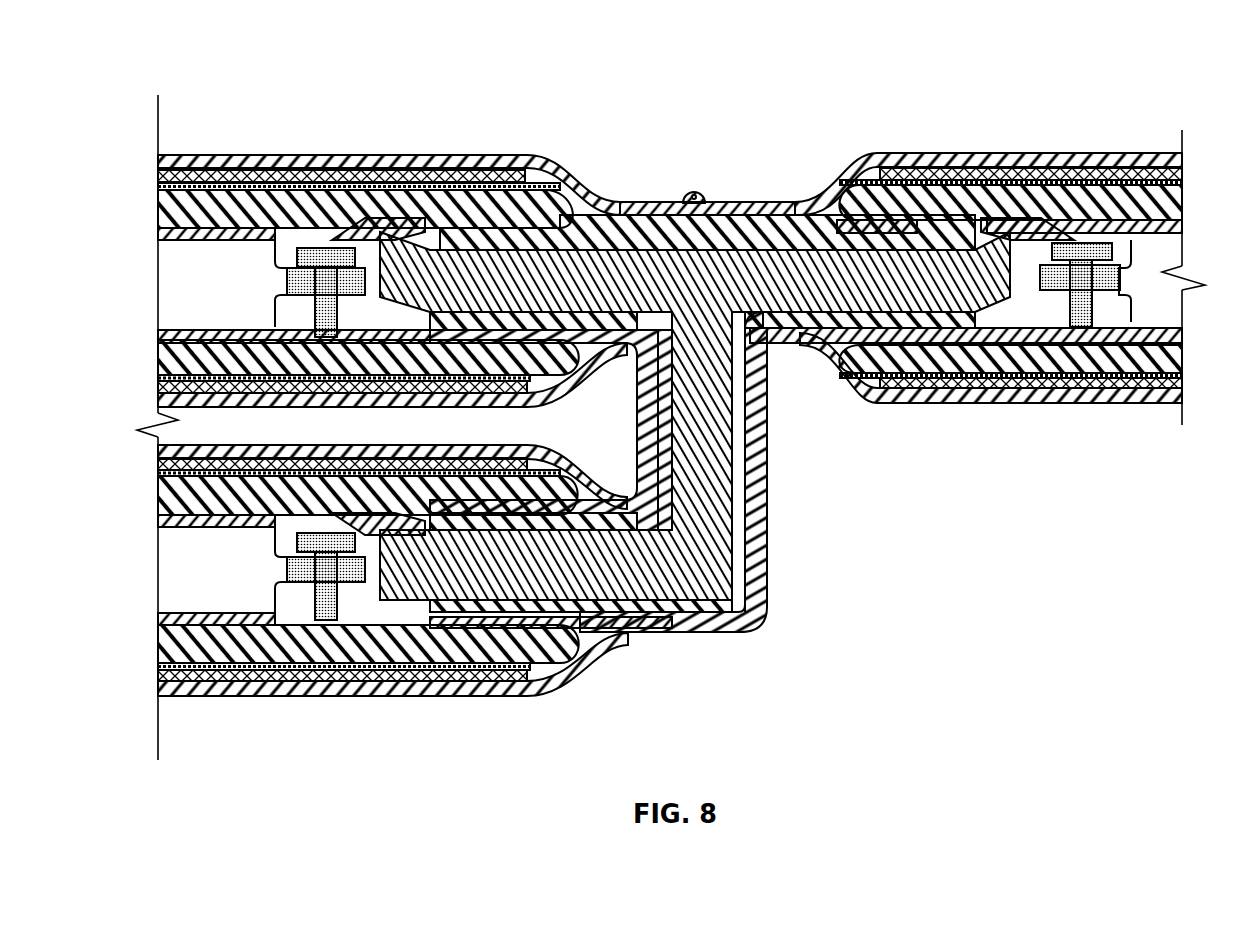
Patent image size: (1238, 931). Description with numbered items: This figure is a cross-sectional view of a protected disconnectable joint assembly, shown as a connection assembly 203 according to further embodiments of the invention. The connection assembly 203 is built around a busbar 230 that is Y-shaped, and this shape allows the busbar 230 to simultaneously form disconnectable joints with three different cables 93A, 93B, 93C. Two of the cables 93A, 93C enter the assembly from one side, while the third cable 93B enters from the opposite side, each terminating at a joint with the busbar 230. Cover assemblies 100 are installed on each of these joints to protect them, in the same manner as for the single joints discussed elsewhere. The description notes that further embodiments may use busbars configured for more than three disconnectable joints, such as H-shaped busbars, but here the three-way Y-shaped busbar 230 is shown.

The connection assembly 203 is at (750, 70).
The cover assembly 100 is at (402, 136).
The cable 93A is at (183, 262).
The cable 93B is at (1143, 255).
The cable 93C is at (248, 597).
The busbar 230 is at (774, 531).